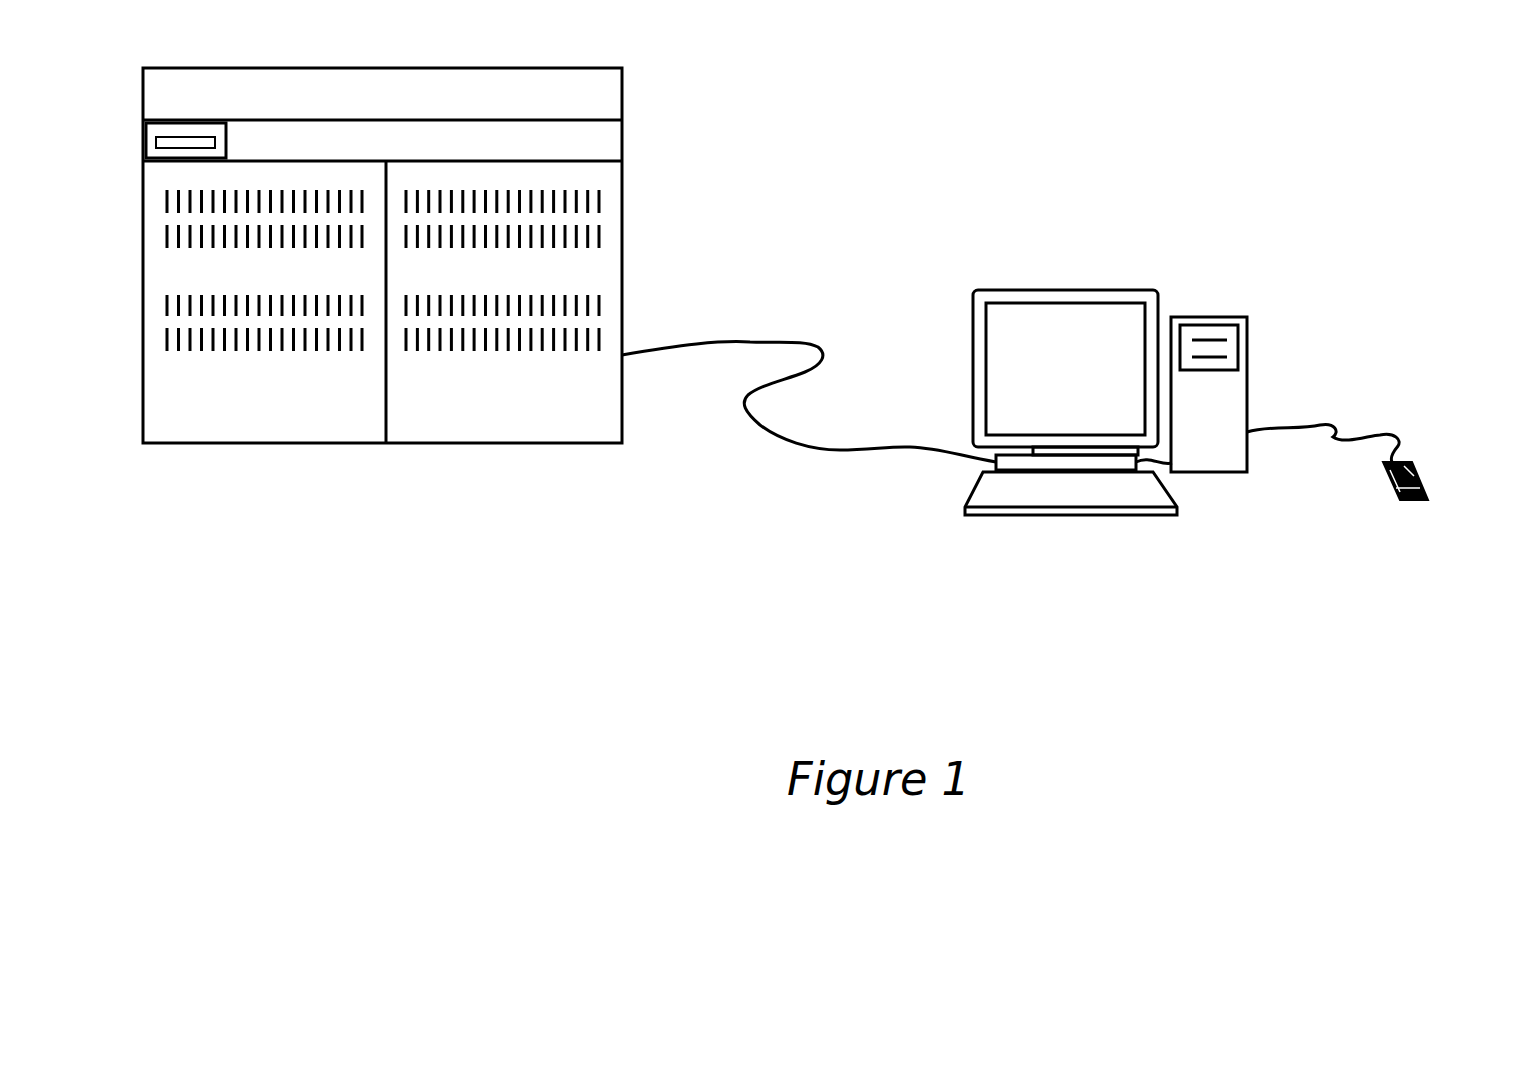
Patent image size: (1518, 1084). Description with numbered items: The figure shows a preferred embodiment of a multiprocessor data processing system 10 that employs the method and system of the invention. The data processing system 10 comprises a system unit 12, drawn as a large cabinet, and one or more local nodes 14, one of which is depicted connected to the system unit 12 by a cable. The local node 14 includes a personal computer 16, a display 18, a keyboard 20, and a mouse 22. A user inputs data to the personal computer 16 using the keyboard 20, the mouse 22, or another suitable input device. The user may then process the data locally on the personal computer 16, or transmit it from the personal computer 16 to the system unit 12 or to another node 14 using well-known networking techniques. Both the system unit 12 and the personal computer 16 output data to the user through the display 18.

The data processing system 10 is at (868, 178).
The system unit 12 is at (622, 197).
The local node 14 is at (1219, 420).
The personal computer 16 is at (1247, 365).
The display 18 is at (1110, 290).
The keyboard 20 is at (1015, 516).
The mouse 22 is at (1427, 480).